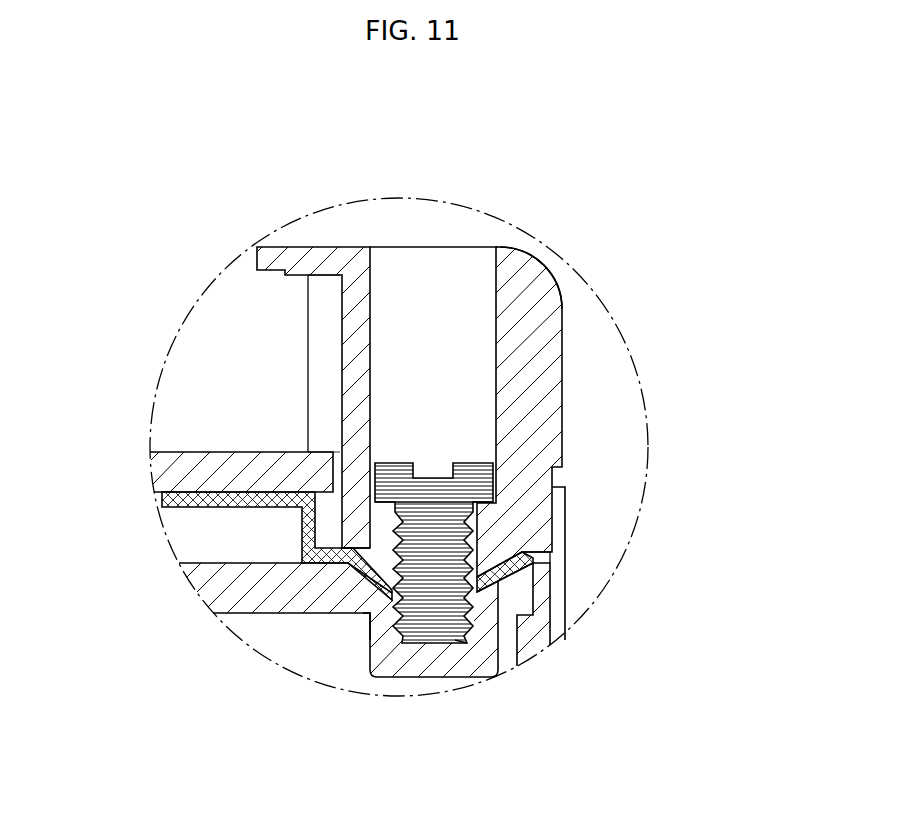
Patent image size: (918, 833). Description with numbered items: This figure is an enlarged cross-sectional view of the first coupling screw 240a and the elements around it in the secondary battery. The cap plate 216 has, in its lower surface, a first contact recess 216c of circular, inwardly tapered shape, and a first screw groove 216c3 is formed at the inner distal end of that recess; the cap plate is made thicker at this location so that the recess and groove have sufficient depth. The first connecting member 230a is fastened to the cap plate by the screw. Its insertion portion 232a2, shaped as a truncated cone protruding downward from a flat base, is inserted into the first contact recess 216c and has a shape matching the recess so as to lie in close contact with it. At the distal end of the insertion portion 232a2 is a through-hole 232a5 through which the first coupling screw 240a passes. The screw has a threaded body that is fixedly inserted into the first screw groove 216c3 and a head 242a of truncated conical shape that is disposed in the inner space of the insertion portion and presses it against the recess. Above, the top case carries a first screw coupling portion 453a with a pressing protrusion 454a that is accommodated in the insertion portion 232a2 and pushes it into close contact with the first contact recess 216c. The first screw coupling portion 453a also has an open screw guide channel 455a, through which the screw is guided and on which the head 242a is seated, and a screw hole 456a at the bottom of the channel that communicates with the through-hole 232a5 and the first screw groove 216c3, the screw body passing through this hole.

The cap plate 216 is at (205, 588).
The first contact recess 216c is at (503, 552).
The first screw groove 216c3 is at (460, 648).
The first connecting member 230a is at (303, 558).
The insertion portion 232a2 is at (371, 602).
The through-hole 232a5 is at (478, 605).
The first coupling screw 240a is at (385, 552).
The head 242a is at (505, 448).
The first screw coupling portion 453a is at (505, 363).
The pressing protrusion 454a is at (368, 540).
The screw guide channel 455a is at (372, 322).
The screw hole 456a is at (443, 527).